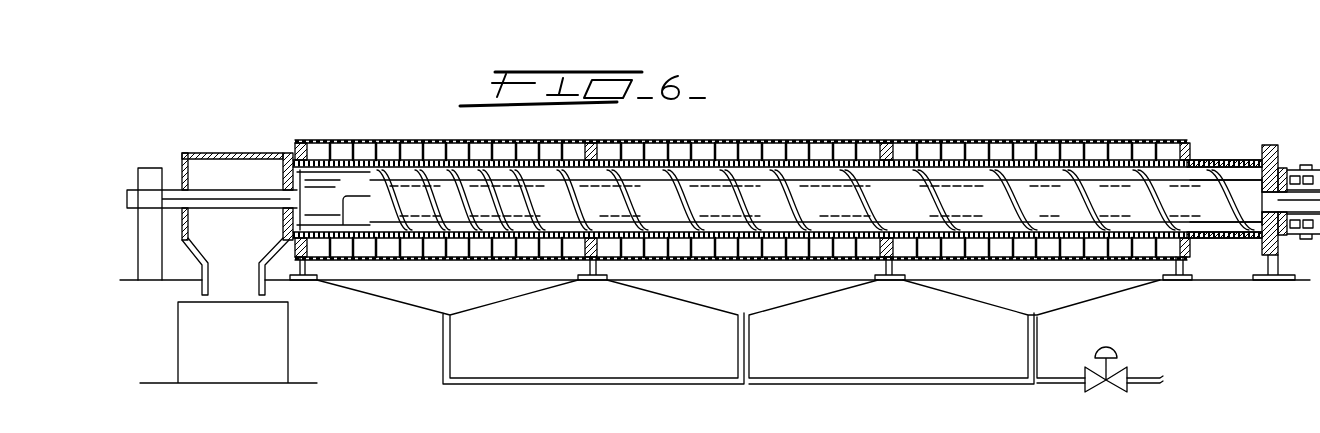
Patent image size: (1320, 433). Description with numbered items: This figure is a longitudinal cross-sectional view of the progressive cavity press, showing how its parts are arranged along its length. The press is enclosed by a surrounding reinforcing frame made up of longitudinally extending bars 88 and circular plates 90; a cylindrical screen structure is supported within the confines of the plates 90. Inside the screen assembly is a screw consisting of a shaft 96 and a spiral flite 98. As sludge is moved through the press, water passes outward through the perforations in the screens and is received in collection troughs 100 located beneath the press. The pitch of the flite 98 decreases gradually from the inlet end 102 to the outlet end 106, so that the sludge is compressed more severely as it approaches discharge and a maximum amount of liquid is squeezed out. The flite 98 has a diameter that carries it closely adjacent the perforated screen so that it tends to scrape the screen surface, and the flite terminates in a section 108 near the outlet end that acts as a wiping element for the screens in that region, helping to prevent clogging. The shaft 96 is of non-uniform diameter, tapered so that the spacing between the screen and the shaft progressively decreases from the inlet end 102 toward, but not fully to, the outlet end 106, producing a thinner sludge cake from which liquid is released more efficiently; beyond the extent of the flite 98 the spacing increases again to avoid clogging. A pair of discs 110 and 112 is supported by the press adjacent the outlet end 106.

The longitudinally extending bars 88 is at (763, 141).
The circular plates 90 is at (972, 157).
The shaft 96 is at (1208, 208).
The flite 98 is at (1021, 216).
The collection troughs 100 is at (483, 292).
The inlet end 102 is at (1200, 167).
The outlet end 106 is at (231, 153).
The section 108 is at (779, 224).
The disc 110 is at (312, 178).
The disc 112 is at (287, 162).